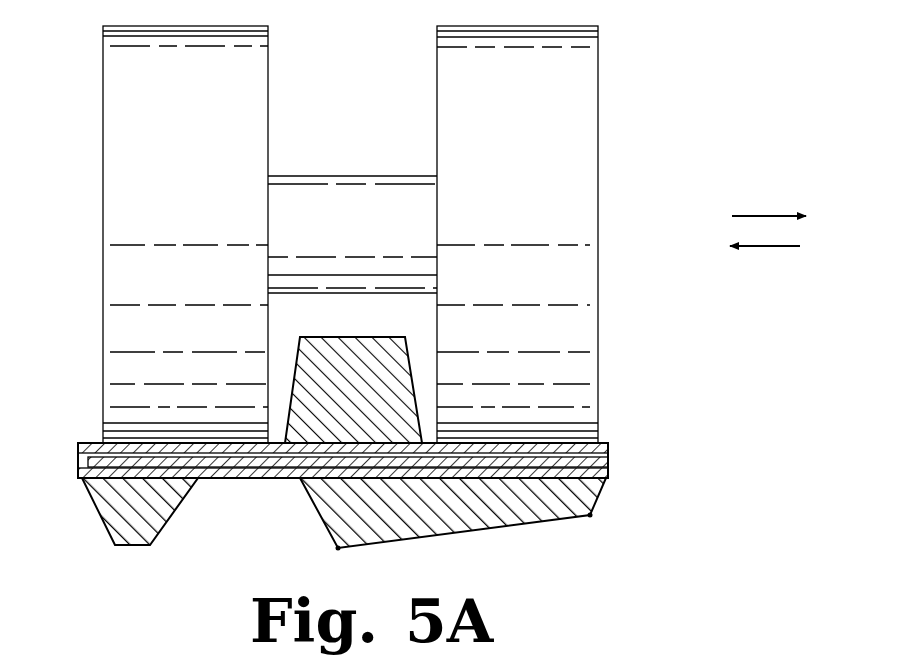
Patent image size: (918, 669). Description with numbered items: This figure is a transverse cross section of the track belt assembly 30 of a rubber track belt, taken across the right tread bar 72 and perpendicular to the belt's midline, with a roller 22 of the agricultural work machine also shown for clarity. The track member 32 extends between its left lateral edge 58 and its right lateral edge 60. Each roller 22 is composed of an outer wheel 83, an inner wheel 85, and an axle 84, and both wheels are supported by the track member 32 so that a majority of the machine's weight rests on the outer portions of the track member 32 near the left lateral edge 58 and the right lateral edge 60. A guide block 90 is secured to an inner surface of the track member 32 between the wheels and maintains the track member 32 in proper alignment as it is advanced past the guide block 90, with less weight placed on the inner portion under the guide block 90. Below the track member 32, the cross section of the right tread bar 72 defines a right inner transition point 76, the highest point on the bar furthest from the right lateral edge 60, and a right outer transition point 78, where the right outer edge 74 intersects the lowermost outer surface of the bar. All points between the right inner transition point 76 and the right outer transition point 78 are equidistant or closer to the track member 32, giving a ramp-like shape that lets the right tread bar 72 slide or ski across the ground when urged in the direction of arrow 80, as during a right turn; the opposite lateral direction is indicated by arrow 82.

The roller 22 is at (632, 86).
The track belt assembly 30 is at (722, 381).
The track member 32 is at (606, 440).
The left lateral edge 58 is at (82, 470).
The right lateral edge 60 is at (612, 464).
The right tread bar 72 is at (527, 526).
The right outer edge 74 is at (598, 498).
The right inner transition point 76 is at (337, 548).
The right outer transition point 78 is at (592, 516).
The arrow 80 is at (760, 216).
The reverse direction arrow 82 is at (776, 248).
The outer wheel 83 is at (586, 172).
The axle 84 is at (352, 196).
The inner wheel 85 is at (118, 116).
The guide block 90 is at (386, 342).